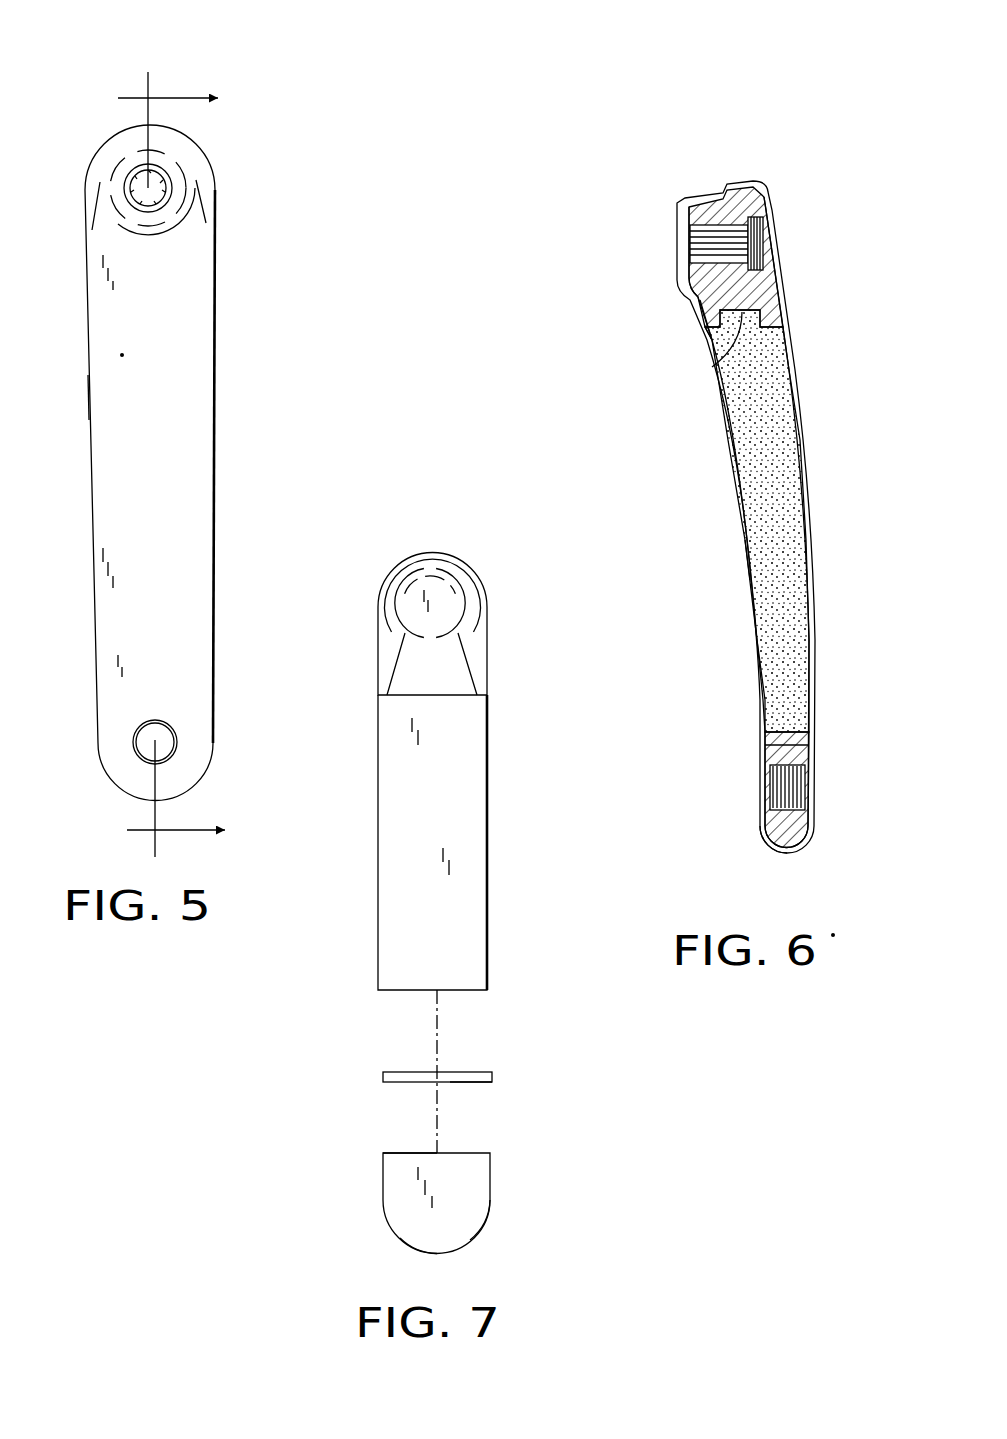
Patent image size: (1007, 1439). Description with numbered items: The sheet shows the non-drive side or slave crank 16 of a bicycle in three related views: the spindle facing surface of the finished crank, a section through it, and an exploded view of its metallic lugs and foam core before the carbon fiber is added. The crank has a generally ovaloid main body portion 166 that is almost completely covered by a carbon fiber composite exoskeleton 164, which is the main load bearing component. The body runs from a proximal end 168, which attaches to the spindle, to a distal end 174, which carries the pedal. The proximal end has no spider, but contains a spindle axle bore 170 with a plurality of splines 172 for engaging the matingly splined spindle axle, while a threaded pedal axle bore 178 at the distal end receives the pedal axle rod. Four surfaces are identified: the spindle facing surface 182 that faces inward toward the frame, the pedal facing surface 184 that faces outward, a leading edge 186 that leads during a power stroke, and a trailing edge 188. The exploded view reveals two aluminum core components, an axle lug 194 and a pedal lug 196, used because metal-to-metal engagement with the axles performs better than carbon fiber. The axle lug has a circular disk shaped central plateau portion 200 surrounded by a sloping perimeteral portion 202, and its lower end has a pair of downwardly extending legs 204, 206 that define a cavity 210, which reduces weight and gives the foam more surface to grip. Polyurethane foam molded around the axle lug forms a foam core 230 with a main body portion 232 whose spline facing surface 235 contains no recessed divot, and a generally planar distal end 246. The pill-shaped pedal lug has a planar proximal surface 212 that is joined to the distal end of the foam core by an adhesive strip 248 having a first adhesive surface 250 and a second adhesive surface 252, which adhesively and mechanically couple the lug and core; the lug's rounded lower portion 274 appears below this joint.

In FIG. 5, the non-drive side crank 16 is at (185, 468).
In FIG. 6, the non-drive side crank 16 is at (694, 488).
In FIG. 6, the carbon fiber composite material exoskeleton 164 is at (743, 539).
In FIG. 5, the main body portion 166 is at (232, 454).
In FIG. 5, the proximal end 168 is at (167, 88).
In FIG. 7, the proximal end 168 is at (434, 540).
In FIG. 6, the proximal end 168 is at (693, 203).
In FIG. 5, the spindle axle bore 170 is at (163, 178).
In FIG. 6, the spindle axle bore 170 is at (678, 246).
In FIG. 5, the splines 172 is at (160, 205).
In FIG. 5, the distal end 174 is at (192, 836).
In FIG. 7, the distal end 174 is at (487, 1244).
In FIG. 6, the distal end 174 is at (766, 857).
In FIG. 5, the threaded pedal axle bore 178 is at (163, 736).
In FIG. 6, the threaded pedal axle bore 178 is at (813, 783).
In FIG. 5, the spindle facing surface 182 is at (181, 438).
In FIG. 6, the spindle facing surface 182 is at (733, 466).
In FIG. 6, the pedal facing surface 184 is at (735, 521).
In FIG. 5, the leading edge 186 is at (88, 392).
In FIG. 5, the trailing edge 188 is at (216, 397).
In FIG. 7, the axle lug 194 is at (475, 571).
In FIG. 7, the pedal lug 196 is at (494, 1186).
In FIG. 7, the central plateau portion 200 is at (448, 588).
In FIG. 7, the sloping perimeteral portion 202 is at (396, 573).
In FIG. 6, the downwardly extending leg 204 is at (712, 354).
In FIG. 6, the downwardly extending leg 206 is at (786, 283).
In FIG. 6, the cavity 210 is at (737, 352).
In FIG. 7, the planar proximal surface 212 is at (398, 1152).
In FIG. 7, the foam core 230 is at (510, 782).
In FIG. 7, the main body portion 232 is at (489, 904).
In FIG. 7, the spline facing surface 235 is at (450, 960).
In FIG. 7, the planar distal end 246 is at (467, 992).
In FIG. 7, the adhesive strip 248 is at (474, 1079).
In FIG. 7, the first adhesive surface 250 is at (397, 1070).
In FIG. 7, the second adhesive surface 252 is at (460, 1083).
In FIG. 7, the cap bottom 274 is at (412, 1243).